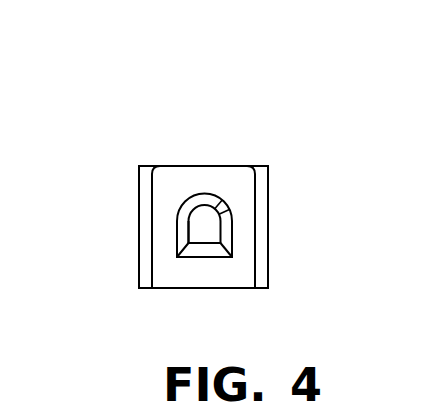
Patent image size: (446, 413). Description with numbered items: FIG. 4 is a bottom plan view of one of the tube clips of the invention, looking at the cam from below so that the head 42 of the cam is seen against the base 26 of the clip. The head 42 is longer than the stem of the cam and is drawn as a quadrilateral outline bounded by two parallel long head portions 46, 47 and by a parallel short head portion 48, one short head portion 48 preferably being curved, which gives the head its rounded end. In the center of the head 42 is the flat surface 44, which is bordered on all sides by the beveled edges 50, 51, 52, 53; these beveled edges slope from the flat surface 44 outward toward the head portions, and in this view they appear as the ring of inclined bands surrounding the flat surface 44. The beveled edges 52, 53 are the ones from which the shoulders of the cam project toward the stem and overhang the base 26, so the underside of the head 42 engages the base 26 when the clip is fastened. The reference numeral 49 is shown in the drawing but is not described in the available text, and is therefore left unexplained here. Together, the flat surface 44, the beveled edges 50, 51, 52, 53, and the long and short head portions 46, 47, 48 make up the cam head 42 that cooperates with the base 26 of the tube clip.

The base 26 is at (163, 187).
The head 42 is at (180, 256).
The flat surface 44 is at (202, 222).
The long head portion 46 is at (226, 226).
The long head portion 47 is at (185, 223).
The short head portion 48 is at (228, 209).
The bottom wall 49 is at (203, 243).
The beveled edge 50 is at (232, 229).
The beveled edge 51 is at (185, 233).
The beveled edge 52 is at (216, 203).
The beveled edge 53 is at (212, 252).